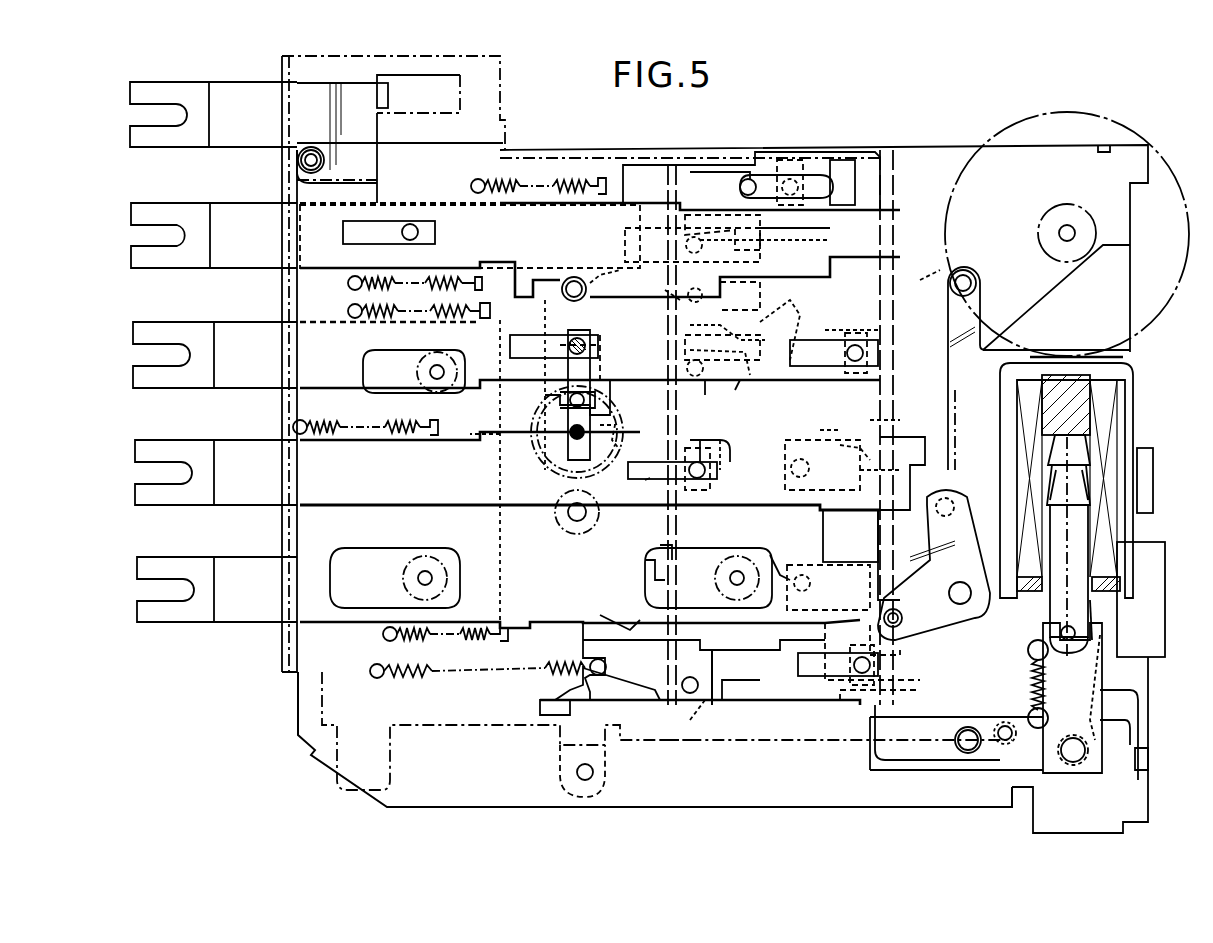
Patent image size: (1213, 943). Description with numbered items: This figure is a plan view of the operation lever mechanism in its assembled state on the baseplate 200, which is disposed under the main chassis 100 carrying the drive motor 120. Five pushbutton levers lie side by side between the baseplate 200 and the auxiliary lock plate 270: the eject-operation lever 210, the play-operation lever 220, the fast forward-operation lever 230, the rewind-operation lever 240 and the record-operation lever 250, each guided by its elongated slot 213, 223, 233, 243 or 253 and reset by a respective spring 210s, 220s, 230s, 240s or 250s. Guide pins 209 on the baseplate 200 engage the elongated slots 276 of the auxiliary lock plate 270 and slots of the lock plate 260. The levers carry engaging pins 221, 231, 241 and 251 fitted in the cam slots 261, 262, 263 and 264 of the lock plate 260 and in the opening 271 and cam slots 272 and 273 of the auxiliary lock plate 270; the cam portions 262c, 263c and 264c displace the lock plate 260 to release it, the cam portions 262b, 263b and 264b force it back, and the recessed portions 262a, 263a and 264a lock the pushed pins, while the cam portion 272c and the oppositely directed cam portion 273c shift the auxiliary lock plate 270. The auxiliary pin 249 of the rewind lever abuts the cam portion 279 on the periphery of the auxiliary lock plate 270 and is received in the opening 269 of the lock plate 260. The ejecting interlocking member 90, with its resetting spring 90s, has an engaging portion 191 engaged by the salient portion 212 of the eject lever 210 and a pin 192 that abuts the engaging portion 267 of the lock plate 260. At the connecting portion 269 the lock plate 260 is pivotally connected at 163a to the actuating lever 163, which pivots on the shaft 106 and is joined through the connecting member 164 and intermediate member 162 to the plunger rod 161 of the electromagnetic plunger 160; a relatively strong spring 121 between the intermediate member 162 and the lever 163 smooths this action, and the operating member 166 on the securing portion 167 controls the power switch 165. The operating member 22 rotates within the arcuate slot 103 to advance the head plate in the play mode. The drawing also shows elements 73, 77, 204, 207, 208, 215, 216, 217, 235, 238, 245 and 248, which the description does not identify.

The operating member 22 is at (958, 531).
The cam follower wheel 73 is at (555, 501).
The cam 77 is at (540, 448).
The ejecting interlocking member 90 is at (740, 695).
The resetting spring 90s is at (432, 673).
The main chassis 100 is at (710, 807).
The arcuate slot 103 is at (912, 565).
The shaft 106 is at (960, 756).
The drive motor 120 is at (995, 136).
The relatively strong spring 121 is at (1028, 691).
The electromagnetic plunger 160 is at (1110, 432).
The plunger rod 161 is at (1080, 581).
The intermediate member 162 is at (1120, 713).
The actuating lever 163 is at (1010, 766).
The pivotal connection 163a is at (875, 760).
The connecting member 164 is at (1073, 766).
The power switch 165 is at (1160, 615).
The switch operating member 166 is at (1138, 693).
The securing portion 167 is at (1150, 759).
The engaging portion 191 is at (595, 625).
The pin 192 is at (680, 700).
The baseplate 200 is at (692, 740).
The slide 204 is at (535, 335).
The pin 207 is at (590, 425).
The arm 208 is at (530, 437).
The guide pins 209 is at (688, 466).
The eject-operation lever 210 is at (249, 622).
The spring 210s is at (466, 608).
The salient portion 212 is at (575, 638).
The elongated slot 213 is at (395, 541).
The pivot 215 is at (565, 280).
The slide bar 216 is at (545, 395).
The arm 217 is at (592, 283).
The play-operation lever 220 is at (247, 505).
The spring 220s is at (402, 433).
The engaging pin 221 is at (800, 575).
The elongated slot 223 is at (645, 478).
The fast forward-operation lever 230 is at (249, 388).
The spring 230s is at (450, 318).
The engaging pin 231 is at (705, 381).
The elongated slot 233 is at (470, 372).
The pin 235 is at (600, 400).
The pivot 238 is at (945, 263).
The rewind-operation lever 240 is at (251, 268).
The spring 240s is at (455, 277).
The engaging pin 241 is at (760, 232).
The elongated slot 243 is at (410, 221).
The arm 245 is at (538, 282).
The pivot pin 248 is at (948, 276).
The auxiliary engaging pin 249 is at (672, 300).
The record-operation lever 250 is at (245, 147).
The spring 250s is at (510, 158).
The engaging pin 251 is at (790, 175).
The elongated slot 253 is at (311, 147).
The lock plate 260 is at (648, 565).
The cam slot 261 is at (797, 605).
The cam slot 262 is at (820, 505).
The recessed portion 262a is at (880, 420).
The cam portion 262b is at (870, 478).
The cam portion 262c is at (850, 440).
The cam slot 263 is at (683, 368).
The recessed portion 263a is at (760, 325).
The cam portion 263b is at (840, 323).
The cam portion 263c is at (685, 332).
The cam slot 264 is at (685, 245).
The recessed portion 264a is at (730, 215).
The cam portion 264b is at (760, 245).
The cam portion 264c is at (700, 160).
The engaging portion 267 is at (695, 692).
The connecting portion 269 is at (685, 292).
The auxiliary lock plate 270 is at (660, 548).
The opening 271 is at (770, 550).
The cam slot 272 is at (785, 470).
The cam portion 272c is at (865, 440).
The cam slot 273 is at (690, 352).
The cam portion 273c is at (740, 381).
The elongated slots 276 is at (800, 743).
The cam portion 279 is at (718, 296).